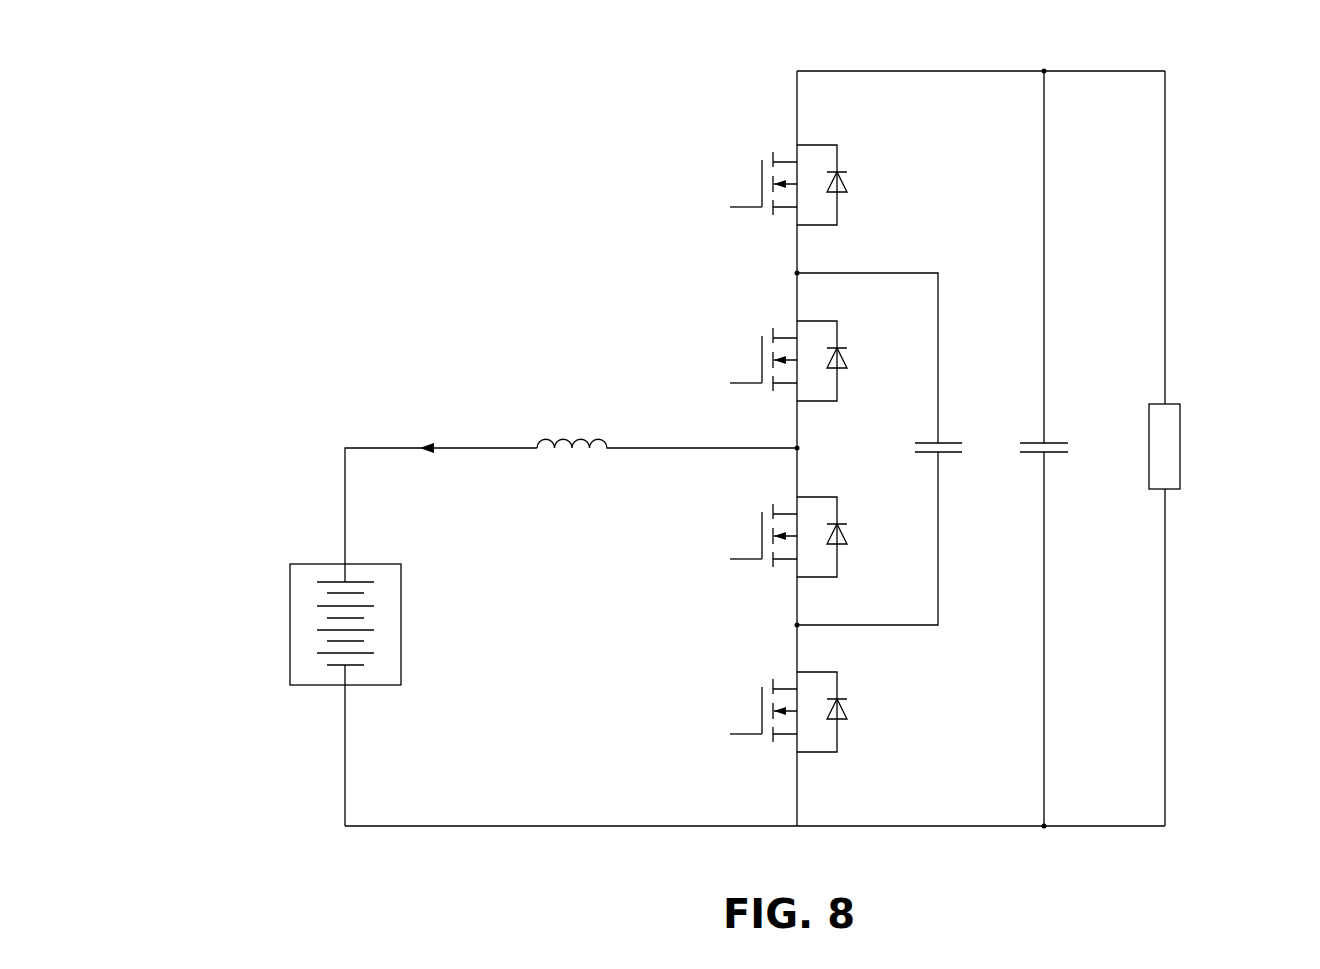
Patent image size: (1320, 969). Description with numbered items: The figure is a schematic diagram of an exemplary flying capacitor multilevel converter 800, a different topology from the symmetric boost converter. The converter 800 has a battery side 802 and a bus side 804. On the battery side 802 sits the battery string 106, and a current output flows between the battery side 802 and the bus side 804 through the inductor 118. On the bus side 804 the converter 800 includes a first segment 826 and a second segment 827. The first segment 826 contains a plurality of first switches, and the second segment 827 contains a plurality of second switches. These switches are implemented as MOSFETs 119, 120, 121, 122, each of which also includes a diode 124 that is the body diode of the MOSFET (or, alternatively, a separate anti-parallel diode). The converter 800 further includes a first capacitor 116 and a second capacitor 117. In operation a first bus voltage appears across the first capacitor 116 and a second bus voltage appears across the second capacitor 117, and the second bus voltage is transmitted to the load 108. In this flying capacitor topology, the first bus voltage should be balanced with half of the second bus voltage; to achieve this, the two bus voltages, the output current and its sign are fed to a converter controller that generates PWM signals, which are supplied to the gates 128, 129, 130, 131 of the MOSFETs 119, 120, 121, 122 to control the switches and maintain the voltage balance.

The flying capacitor multilevel converter 800 is at (321, 88).
The battery side 802 is at (321, 415).
The bus side 804 is at (1181, 811).
The first segment 826 is at (961, 53).
The second segment 827 is at (907, 261).
The battery string 106 is at (290, 618).
The load 108 is at (1180, 443).
The first capacitor 116 is at (1046, 440).
The second capacitor 117 is at (940, 440).
The inductor 118 is at (600, 440).
The MOSFET 119 is at (750, 127).
The MOSFET 120 is at (755, 667).
The MOSFET 121 is at (746, 316).
The MOSFET 122 is at (753, 488).
The diode 124 is at (842, 196).
The gate 128 is at (735, 214).
The gate 129 is at (746, 742).
The gate 130 is at (740, 390).
The gate 131 is at (746, 566).